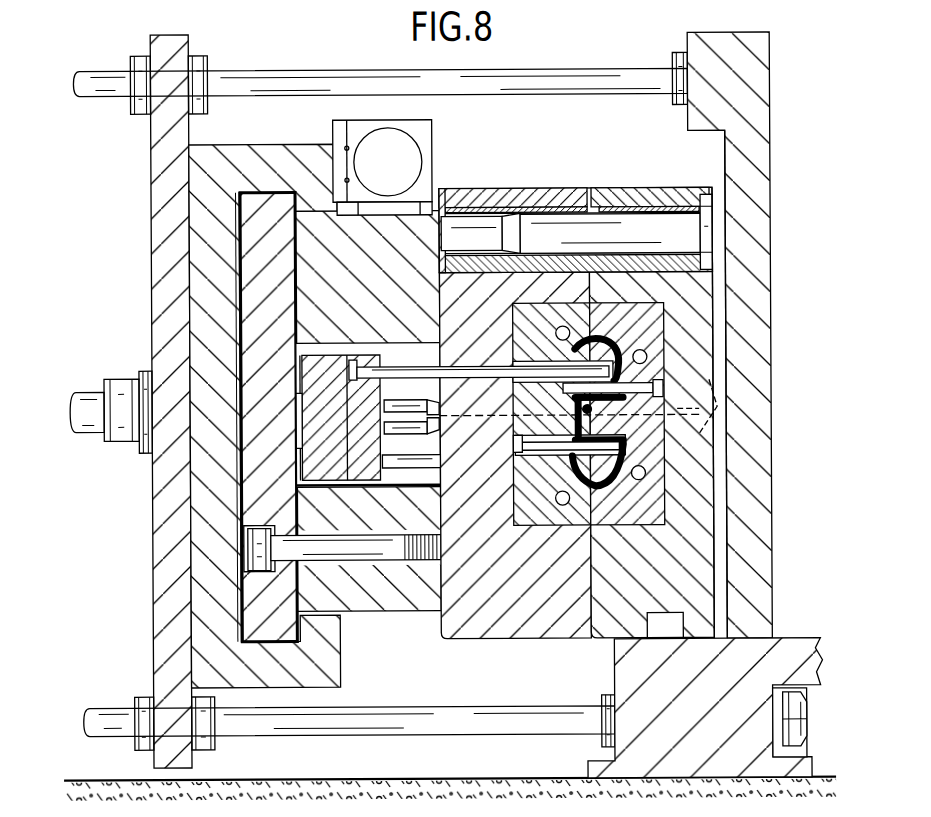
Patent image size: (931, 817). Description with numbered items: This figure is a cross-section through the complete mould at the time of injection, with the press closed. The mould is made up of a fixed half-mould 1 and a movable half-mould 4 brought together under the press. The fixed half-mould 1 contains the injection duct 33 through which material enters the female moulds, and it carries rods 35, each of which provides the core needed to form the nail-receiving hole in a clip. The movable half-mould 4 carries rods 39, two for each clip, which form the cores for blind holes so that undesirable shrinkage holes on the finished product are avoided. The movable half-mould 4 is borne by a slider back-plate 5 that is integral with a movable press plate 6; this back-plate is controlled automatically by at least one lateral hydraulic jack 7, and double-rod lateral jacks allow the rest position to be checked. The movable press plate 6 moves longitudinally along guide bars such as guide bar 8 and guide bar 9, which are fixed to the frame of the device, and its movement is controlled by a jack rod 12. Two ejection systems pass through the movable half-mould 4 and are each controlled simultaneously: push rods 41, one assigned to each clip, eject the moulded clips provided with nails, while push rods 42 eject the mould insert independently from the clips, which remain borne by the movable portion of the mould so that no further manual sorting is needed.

The fixed half-mould 1 is at (724, 612).
The movable half-mould 4 is at (533, 642).
The slider back-plate 5 is at (217, 225).
The movable press plate 6 is at (178, 565).
The lateral hydraulic jack 7 is at (400, 160).
The guide bar 8 is at (384, 716).
The guide bar 9 is at (262, 80).
The jack rod 12 is at (87, 420).
The injection duct 33 is at (683, 408).
The rod 35 is at (636, 380).
The rod 39 is at (527, 472).
The push rod 41 is at (413, 368).
The push rod 42 is at (428, 440).